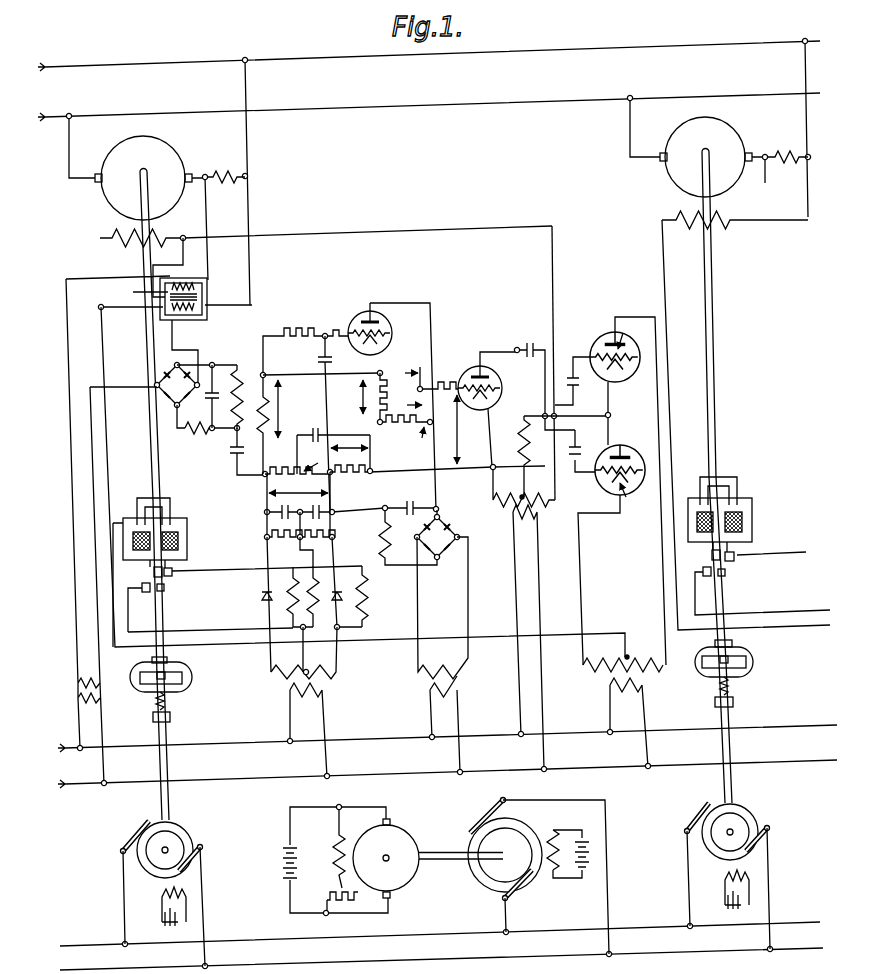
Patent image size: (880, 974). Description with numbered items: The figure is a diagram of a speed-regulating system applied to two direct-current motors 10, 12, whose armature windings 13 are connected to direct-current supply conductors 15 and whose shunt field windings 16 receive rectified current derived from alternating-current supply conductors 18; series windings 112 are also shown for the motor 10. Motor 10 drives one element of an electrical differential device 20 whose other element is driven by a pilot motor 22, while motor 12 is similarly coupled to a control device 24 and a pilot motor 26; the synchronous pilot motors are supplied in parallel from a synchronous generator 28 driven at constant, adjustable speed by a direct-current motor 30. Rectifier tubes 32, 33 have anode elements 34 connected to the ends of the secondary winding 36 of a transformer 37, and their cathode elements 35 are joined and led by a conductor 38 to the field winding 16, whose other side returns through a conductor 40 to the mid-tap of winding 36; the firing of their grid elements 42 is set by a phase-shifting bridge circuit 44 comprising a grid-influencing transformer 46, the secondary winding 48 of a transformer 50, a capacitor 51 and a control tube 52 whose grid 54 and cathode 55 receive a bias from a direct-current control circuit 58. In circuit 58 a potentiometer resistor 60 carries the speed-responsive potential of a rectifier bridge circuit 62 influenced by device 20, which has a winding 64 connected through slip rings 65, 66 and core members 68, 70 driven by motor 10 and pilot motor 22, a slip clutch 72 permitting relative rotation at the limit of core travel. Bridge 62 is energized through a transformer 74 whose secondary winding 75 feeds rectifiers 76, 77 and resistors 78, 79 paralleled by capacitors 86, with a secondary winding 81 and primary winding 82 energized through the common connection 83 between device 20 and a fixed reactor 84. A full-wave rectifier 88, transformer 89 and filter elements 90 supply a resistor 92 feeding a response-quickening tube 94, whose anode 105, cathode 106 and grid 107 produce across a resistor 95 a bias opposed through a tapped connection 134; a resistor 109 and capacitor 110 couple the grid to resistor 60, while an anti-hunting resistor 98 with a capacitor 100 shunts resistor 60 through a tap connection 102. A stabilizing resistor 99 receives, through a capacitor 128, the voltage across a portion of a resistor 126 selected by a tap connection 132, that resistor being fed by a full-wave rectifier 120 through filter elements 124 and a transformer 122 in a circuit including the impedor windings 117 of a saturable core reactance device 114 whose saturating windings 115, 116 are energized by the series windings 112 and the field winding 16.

The direct-current motor 10 is at (135, 466).
The direct-current motor 12 is at (745, 131).
The armature winding 13 is at (170, 152).
The direct-current supply circuit conductors 15 is at (370, 62).
The shunt field winding 16 is at (130, 247).
The alternating-current supply conductors 18 is at (385, 740).
The electrical differential device 20 is at (163, 560).
The pilot motor 22 is at (163, 893).
The control device 24 is at (759, 546).
The pilot motor 26 is at (728, 876).
The synchronous generator 28 is at (514, 876).
The direct current motor 30 is at (351, 859).
The rectifier tube 32 is at (610, 491).
The rectifier tube 33 is at (607, 547).
The anode element 34 is at (628, 336).
The cathode element 35 is at (632, 393).
The secondary winding 36 is at (652, 655).
The transformer 37 is at (620, 711).
The conductor 38 is at (558, 287).
The conductor 40 is at (107, 357).
The grid element 42 is at (630, 352).
The phase-shifting bridge circuit 44 is at (531, 542).
The grid-influencing transformer 46 is at (529, 438).
The secondary winding 48 is at (495, 500).
The transformer 50 is at (541, 637).
The capacitor 51 is at (532, 343).
The control tube 52 is at (486, 405).
The grid element 54 is at (488, 381).
The cathode element 55 is at (493, 398).
The direct-current circuit 58 is at (404, 402).
The potentiometer resistor 60 is at (288, 470).
The rectifier bridge circuit 62 is at (258, 572).
The winding 64 is at (180, 541).
The slip ring 65 is at (153, 573).
The slip ring 66 is at (165, 588).
The core member 68 is at (145, 497).
The core member 70 is at (142, 568).
The slip clutch 72 is at (441, 681).
The transformer 74 is at (307, 702).
The secondary winding 75 is at (305, 670).
The rectifier 76 is at (265, 597).
The rectifier 77 is at (344, 600).
The resistor 78 is at (290, 540).
The resistor 79 is at (312, 540).
The secondary winding 81 is at (315, 598).
The primary winding 82 is at (271, 604).
The common connection 83 is at (296, 575).
The reactor 84 is at (366, 596).
The capacitor 86 is at (324, 505).
The full wave rectifier 88 is at (436, 536).
The transformer 89 is at (454, 654).
The filter elements 90 is at (391, 532).
The resistor 92 is at (404, 432).
The response-quickening vacuum tube 94 is at (378, 324).
The resistor 95 is at (387, 387).
The resistor 98 is at (347, 476).
The resistor 99 is at (262, 438).
The capacitor 100 is at (318, 428).
The tap connection 102 is at (316, 457).
The anode 105 is at (382, 322).
The cathode 106 is at (389, 343).
The grid element 107 is at (392, 333).
The resistor 109 is at (294, 332).
The capacitor 110 is at (318, 360).
The series windings 112 is at (229, 183).
The saturable core reactance device 114 is at (175, 316).
The saturating winding 115 is at (200, 291).
The second saturating winding 116 is at (139, 293).
The impedor windings 117 is at (190, 282).
The full-wave rectifier 120 is at (163, 573).
The transformer 122 is at (96, 513).
The filter elements 124 is at (211, 436).
The resistor 126 is at (216, 380).
The capacitor 128 is at (230, 452).
The tap connection 132 is at (247, 397).
The tapped connection 134 is at (425, 439).